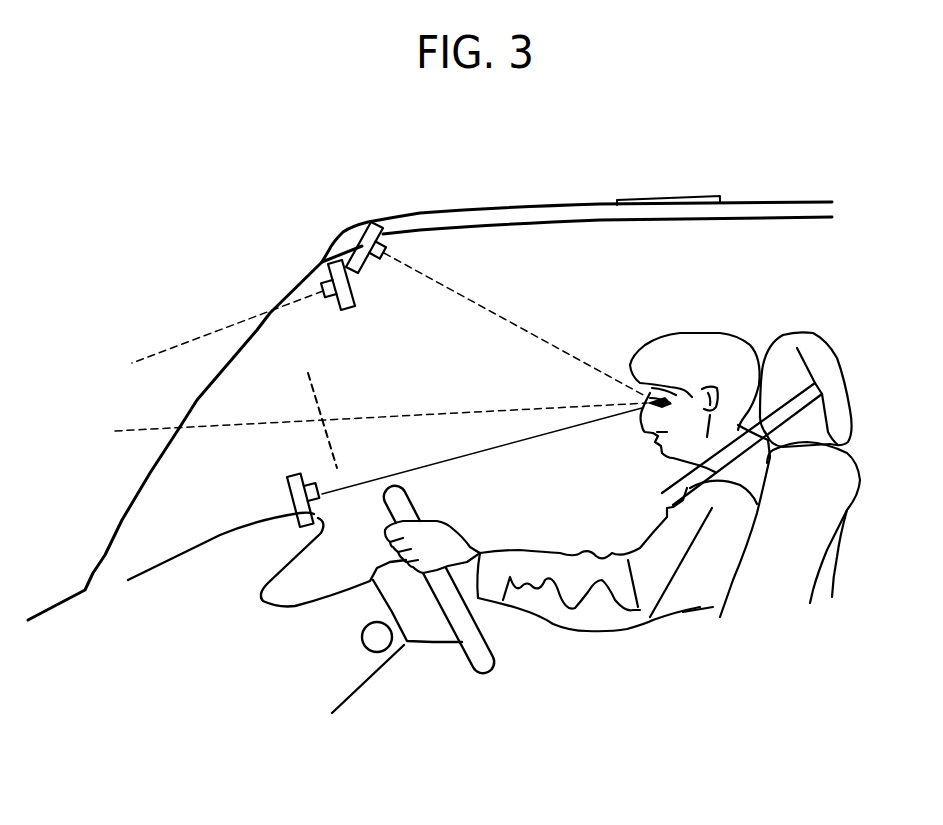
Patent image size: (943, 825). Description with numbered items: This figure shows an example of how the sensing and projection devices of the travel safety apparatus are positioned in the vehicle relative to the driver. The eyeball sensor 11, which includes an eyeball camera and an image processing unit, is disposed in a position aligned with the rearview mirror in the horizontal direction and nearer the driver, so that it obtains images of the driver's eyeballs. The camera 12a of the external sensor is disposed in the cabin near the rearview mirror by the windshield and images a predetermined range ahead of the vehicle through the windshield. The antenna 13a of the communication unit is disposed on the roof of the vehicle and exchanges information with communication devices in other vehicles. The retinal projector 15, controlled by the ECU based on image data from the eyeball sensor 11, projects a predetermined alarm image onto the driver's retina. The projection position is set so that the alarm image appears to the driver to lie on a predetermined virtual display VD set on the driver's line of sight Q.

The eyeball sensor 11 is at (350, 236).
The camera 12a is at (324, 266).
The antenna 13a is at (672, 196).
The retinal projector 15 is at (292, 478).
The line of sight Q is at (133, 428).
The virtual display VD is at (314, 385).